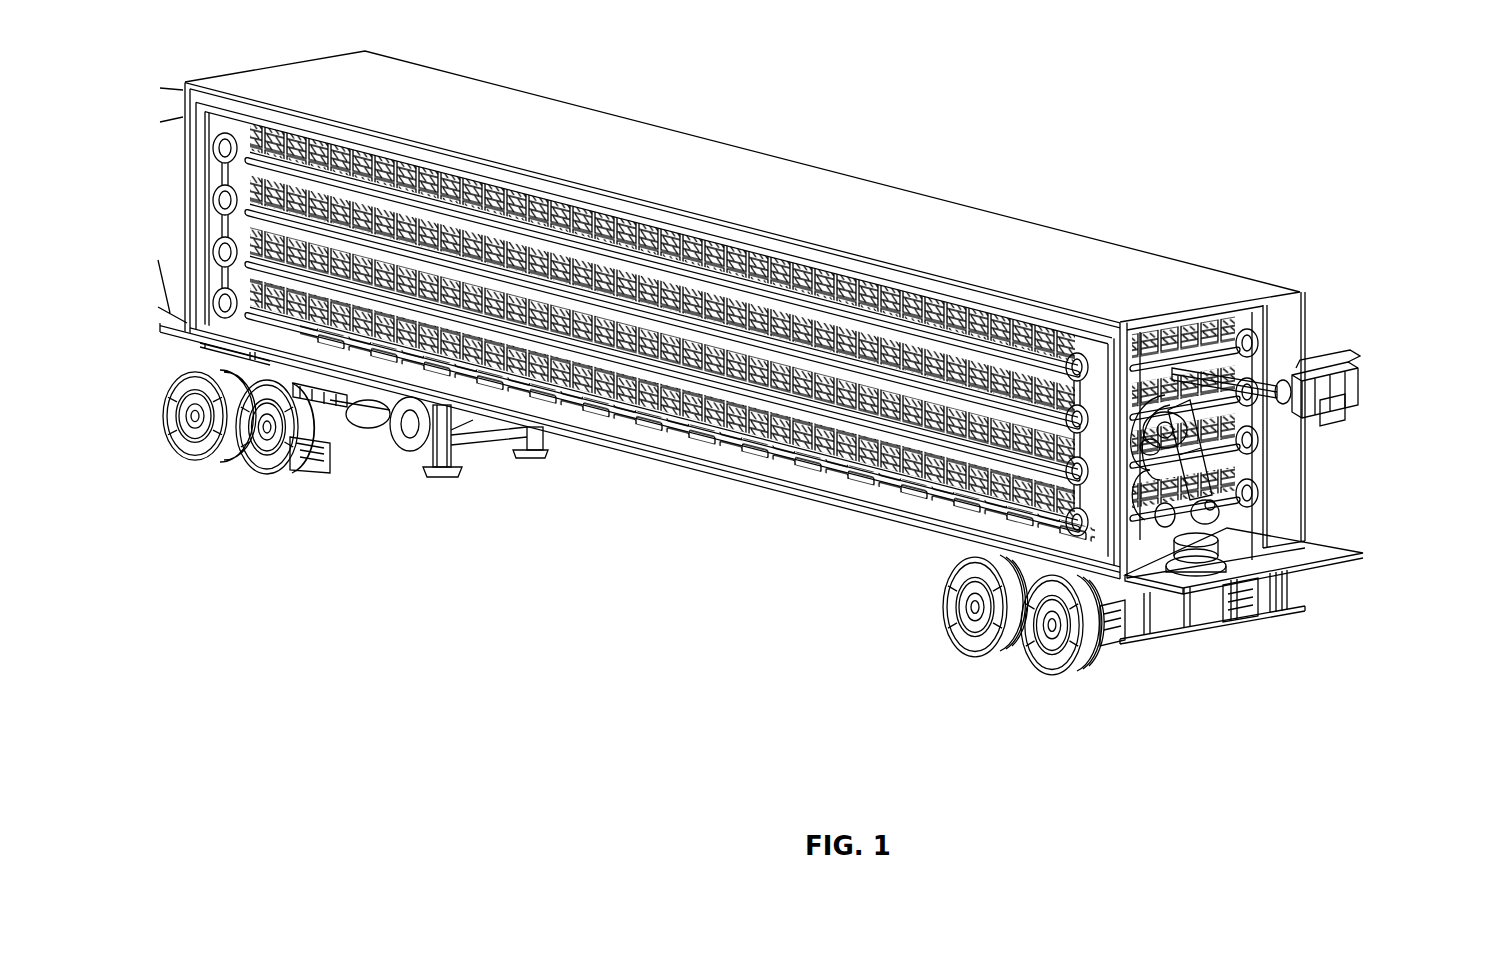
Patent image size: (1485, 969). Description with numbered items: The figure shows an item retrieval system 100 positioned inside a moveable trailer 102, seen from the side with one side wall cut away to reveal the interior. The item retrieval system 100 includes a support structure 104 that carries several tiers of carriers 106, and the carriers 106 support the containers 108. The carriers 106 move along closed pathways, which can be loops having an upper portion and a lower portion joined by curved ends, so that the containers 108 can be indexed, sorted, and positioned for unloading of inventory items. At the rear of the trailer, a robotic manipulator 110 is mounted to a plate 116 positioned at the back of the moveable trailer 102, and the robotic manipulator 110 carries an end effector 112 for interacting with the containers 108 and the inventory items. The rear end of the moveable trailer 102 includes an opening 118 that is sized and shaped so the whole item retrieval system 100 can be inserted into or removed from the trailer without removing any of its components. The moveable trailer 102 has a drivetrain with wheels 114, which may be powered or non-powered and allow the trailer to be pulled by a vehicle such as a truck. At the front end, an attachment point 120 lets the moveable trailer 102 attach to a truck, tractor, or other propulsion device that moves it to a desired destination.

The item retrieval system 100 is at (152, 208).
The moveable trailer 102 is at (874, 198).
The support structure 104 is at (1265, 338).
The carriers 106 is at (1232, 322).
The containers 108 is at (1167, 327).
The robotic manipulator 110 is at (1380, 373).
The end effector 112 is at (1358, 403).
The wheels 114 is at (262, 472).
The plate 116 is at (1358, 553).
The opening 118 is at (1306, 495).
The attachment point 120 is at (182, 345).